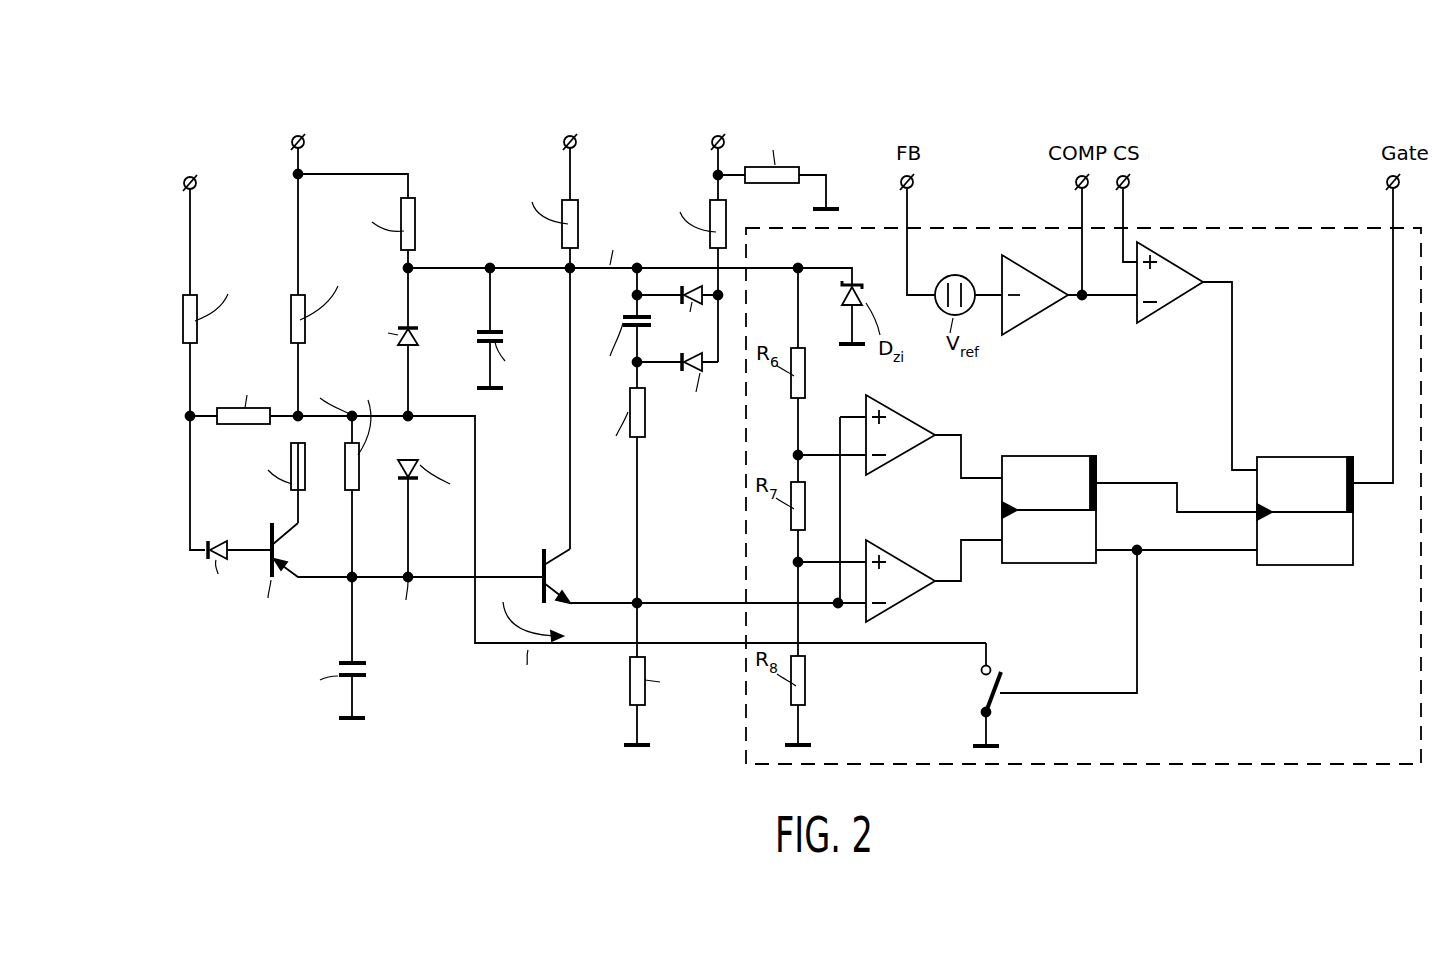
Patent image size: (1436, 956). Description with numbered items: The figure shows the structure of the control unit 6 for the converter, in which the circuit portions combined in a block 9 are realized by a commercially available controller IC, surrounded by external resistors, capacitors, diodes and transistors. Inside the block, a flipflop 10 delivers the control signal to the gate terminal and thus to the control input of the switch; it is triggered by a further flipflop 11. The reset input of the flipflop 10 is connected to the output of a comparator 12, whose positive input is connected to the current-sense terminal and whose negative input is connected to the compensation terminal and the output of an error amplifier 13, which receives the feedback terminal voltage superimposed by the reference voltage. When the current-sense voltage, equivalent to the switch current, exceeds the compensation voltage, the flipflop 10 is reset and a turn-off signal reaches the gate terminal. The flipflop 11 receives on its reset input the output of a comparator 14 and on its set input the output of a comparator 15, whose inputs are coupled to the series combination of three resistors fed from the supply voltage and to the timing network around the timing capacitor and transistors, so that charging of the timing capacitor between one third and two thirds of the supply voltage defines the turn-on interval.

The control unit 6 is at (300, 747).
The block 9 is at (1336, 768).
The flipflop 10 is at (1292, 456).
The further flipflop 11 is at (1037, 455).
The comparator 12 is at (1177, 274).
The error amplifier 13 is at (1040, 284).
The comparator 14 is at (905, 422).
The comparator 15 is at (905, 566).